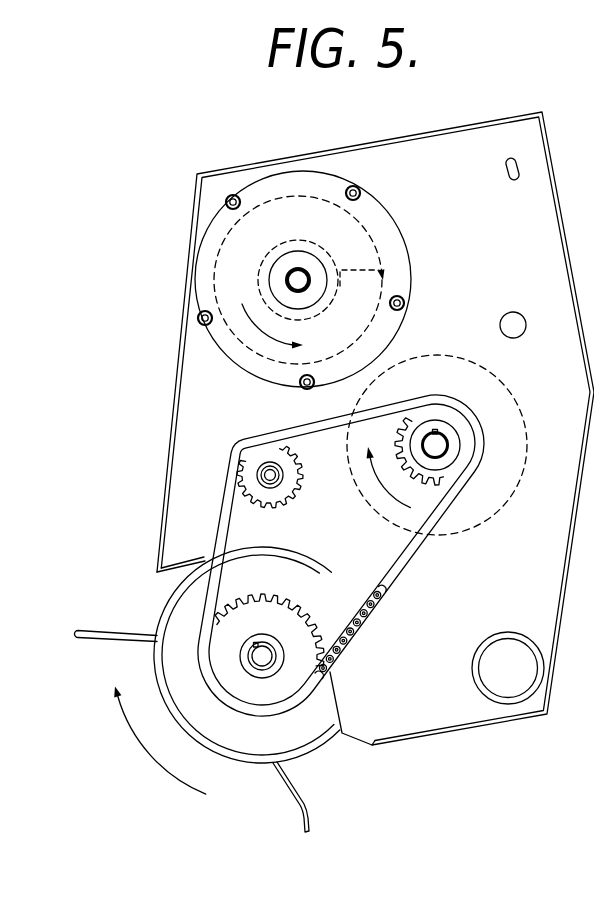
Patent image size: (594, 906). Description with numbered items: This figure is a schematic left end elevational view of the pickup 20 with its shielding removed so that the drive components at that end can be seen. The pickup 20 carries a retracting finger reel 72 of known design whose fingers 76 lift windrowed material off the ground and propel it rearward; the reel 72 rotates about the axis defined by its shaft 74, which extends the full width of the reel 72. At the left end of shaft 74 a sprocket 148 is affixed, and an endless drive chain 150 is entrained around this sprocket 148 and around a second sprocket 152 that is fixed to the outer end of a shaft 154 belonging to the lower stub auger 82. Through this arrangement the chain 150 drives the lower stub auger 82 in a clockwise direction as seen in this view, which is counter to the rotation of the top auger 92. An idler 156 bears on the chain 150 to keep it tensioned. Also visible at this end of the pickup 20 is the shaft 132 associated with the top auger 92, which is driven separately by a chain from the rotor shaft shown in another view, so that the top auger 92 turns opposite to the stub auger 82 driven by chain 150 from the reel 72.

The pickup 20 is at (191, 126).
The top auger 92 is at (223, 219).
The shaft 132 is at (295, 276).
The lower stub auger 82 is at (461, 337).
The shaft 154 is at (438, 445).
The sprocket 152 is at (433, 486).
The idler 156 is at (283, 502).
The sprocket 148 is at (293, 622).
The endless drive chain 150 is at (372, 615).
The retracting finger reel 72 is at (142, 613).
The shaft 74 is at (265, 664).
The fingers 76 is at (302, 807).